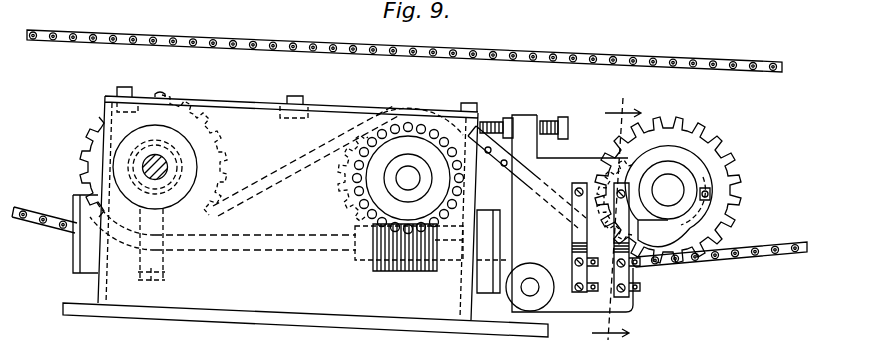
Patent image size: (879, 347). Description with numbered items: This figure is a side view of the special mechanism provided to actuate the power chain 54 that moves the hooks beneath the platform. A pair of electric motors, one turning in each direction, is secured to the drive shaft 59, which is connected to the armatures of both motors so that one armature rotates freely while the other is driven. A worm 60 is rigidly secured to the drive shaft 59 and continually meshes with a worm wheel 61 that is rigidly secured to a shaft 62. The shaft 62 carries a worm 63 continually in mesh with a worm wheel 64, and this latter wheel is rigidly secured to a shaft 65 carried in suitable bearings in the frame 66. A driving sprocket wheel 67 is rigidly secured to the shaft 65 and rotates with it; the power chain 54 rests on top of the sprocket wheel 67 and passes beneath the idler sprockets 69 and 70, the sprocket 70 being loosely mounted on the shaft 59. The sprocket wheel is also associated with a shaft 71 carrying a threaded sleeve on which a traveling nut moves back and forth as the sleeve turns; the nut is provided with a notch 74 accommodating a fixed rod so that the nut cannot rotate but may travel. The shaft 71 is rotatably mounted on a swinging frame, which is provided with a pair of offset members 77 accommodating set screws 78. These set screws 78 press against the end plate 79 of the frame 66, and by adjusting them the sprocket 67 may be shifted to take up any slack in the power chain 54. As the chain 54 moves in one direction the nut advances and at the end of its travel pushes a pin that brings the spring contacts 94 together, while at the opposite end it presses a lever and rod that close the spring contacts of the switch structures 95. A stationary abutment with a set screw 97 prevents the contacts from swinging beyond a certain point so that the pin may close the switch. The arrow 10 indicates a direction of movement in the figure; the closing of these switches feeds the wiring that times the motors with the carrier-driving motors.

The direction of movement arrow 10 is at (616, 212).
The power chain 54 is at (352, 42).
The drive shaft 59 is at (156, 158).
The worm 60 is at (183, 164).
The worm wheel 61 is at (151, 281).
The shaft 62 is at (312, 250).
The worm 63 is at (407, 276).
The worm wheel 64 is at (340, 190).
The shaft 65 is at (408, 178).
The frame 66 is at (332, 111).
The driving sprocket wheel 67 is at (338, 163).
The idler sprocket 69 is at (697, 137).
The idler sprocket 70 is at (94, 153).
The shaft 71 is at (668, 190).
The notch 74 is at (712, 194).
The offset members 77 is at (526, 118).
The set screws 78 is at (556, 121).
The end plate 79 is at (470, 128).
The spring contacts 94 is at (573, 222).
The switch structures 95 is at (612, 233).
The set screw 97 is at (597, 190).